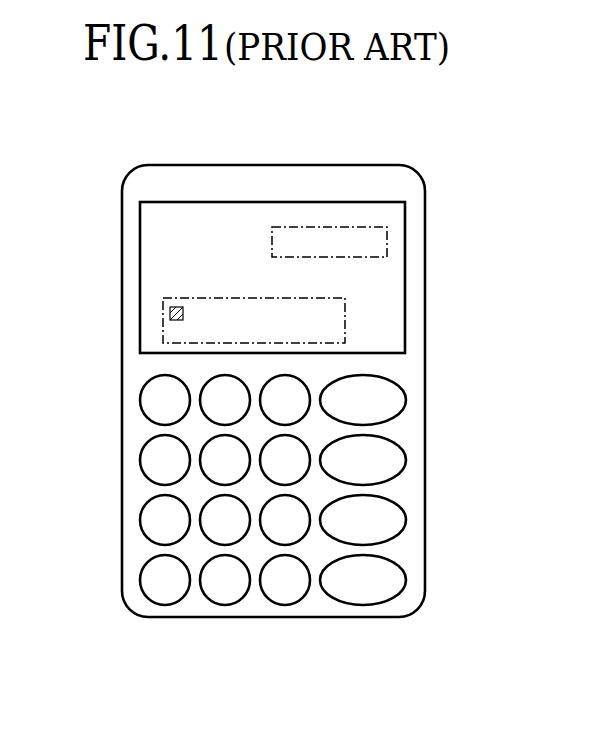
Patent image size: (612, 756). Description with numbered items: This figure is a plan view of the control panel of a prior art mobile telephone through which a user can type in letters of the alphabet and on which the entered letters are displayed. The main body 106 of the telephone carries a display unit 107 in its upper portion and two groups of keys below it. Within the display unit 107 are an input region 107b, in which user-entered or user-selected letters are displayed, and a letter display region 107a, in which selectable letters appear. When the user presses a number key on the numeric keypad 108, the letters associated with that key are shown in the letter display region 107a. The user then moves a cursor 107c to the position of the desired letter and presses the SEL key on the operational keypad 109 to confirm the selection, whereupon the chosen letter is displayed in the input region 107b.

The main body 106 is at (220, 165).
The display unit 107 is at (140, 235).
The letter display region 107a is at (345, 333).
The input region 107b is at (367, 257).
The cursor 107c is at (168, 318).
The numeric keypad 108 is at (142, 628).
The operational keypad 109 is at (408, 628).